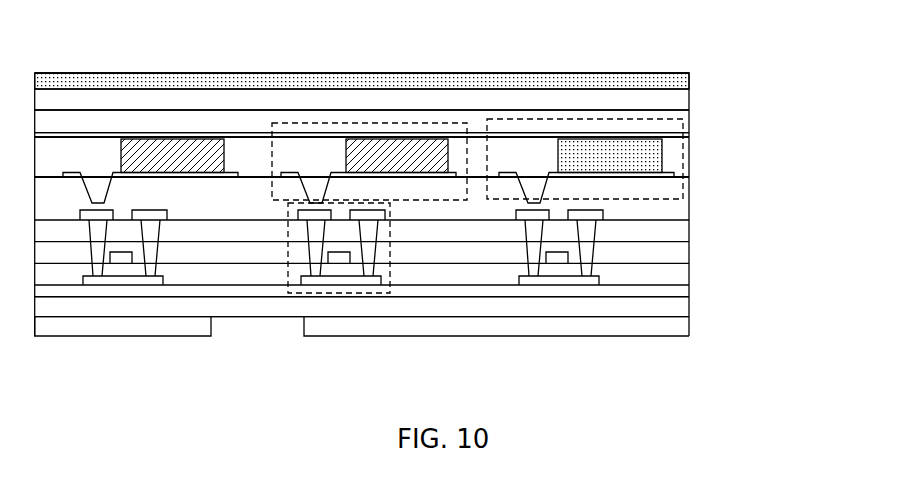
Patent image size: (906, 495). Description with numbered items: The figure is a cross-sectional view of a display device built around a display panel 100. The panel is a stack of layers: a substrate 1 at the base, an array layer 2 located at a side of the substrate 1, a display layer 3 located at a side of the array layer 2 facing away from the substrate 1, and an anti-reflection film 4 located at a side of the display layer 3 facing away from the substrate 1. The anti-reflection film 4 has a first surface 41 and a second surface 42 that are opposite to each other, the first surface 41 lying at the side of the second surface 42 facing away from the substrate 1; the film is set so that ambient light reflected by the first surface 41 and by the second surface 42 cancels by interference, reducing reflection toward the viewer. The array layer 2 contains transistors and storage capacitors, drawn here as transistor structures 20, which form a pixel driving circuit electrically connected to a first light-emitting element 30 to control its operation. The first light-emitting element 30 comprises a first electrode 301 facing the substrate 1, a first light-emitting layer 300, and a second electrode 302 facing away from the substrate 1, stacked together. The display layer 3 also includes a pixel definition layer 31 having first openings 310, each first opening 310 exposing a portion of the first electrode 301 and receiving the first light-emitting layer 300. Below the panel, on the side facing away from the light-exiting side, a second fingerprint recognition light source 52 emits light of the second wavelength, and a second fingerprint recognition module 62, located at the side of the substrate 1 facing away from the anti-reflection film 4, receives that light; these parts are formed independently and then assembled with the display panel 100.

The display panel 100 is at (735, 72).
The substrate 1 is at (673, 312).
The array layer 2 is at (695, 180).
The display layer 3 is at (695, 137).
The anti-reflection film 4 is at (673, 80).
The first surface 41 is at (667, 73).
The second surface 42 is at (662, 90).
The thin film transistor 20 is at (341, 293).
The first light-emitting element 30 is at (272, 203).
The pixel definition layer 31 is at (248, 157).
The first light-emitting layer 300 is at (142, 150).
The first opening 310 is at (585, 202).
The first electrode 301 is at (185, 177).
The second electrode 302 is at (67, 137).
The second fingerprint recognition light source 52 is at (153, 322).
The second fingerprint recognition module 62 is at (492, 325).